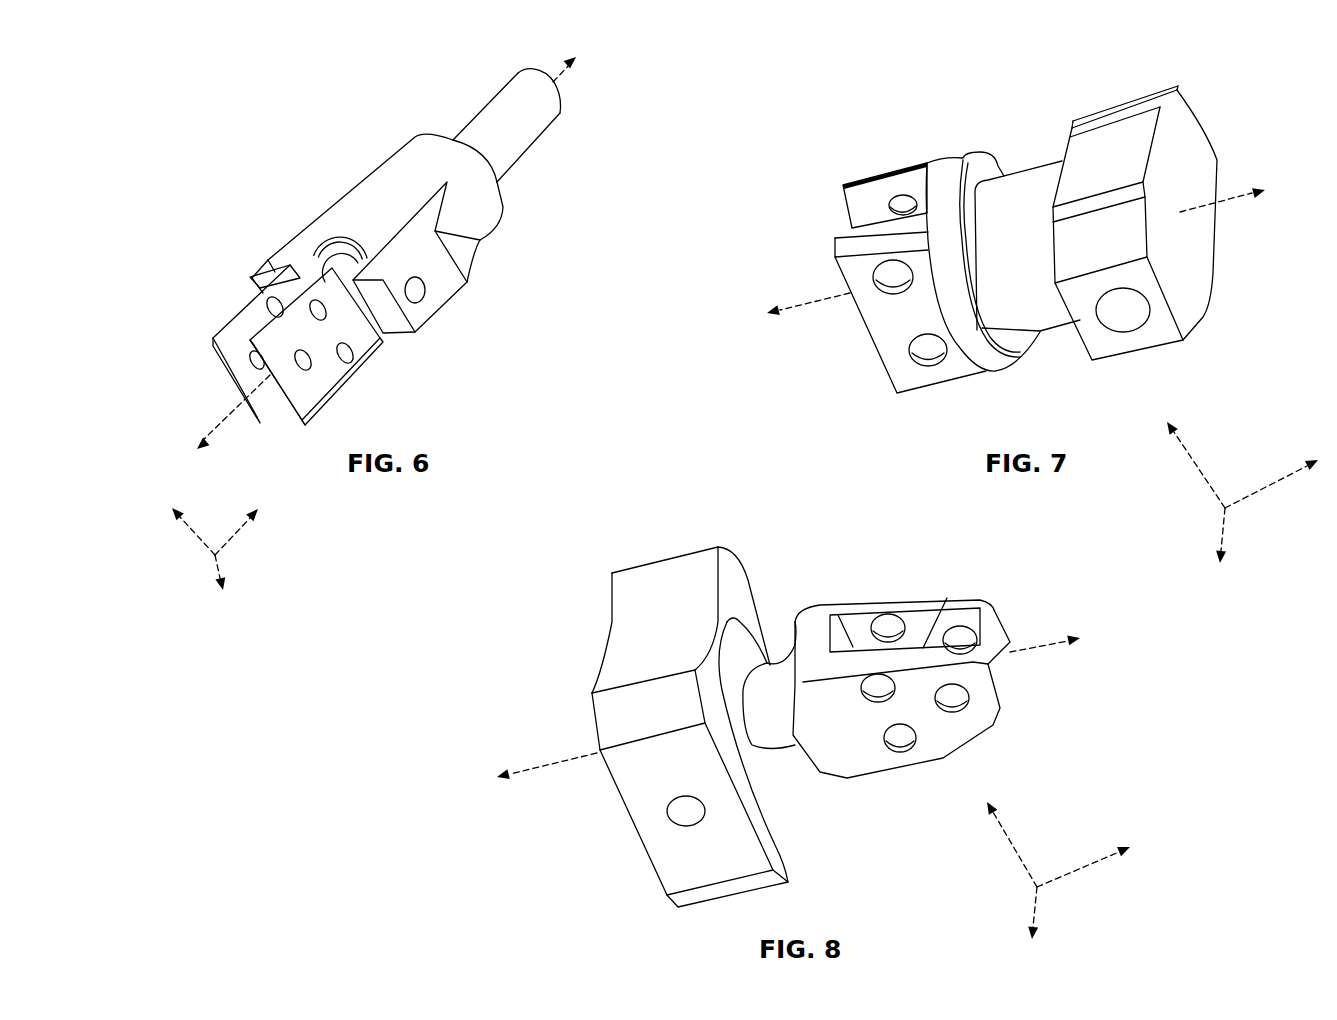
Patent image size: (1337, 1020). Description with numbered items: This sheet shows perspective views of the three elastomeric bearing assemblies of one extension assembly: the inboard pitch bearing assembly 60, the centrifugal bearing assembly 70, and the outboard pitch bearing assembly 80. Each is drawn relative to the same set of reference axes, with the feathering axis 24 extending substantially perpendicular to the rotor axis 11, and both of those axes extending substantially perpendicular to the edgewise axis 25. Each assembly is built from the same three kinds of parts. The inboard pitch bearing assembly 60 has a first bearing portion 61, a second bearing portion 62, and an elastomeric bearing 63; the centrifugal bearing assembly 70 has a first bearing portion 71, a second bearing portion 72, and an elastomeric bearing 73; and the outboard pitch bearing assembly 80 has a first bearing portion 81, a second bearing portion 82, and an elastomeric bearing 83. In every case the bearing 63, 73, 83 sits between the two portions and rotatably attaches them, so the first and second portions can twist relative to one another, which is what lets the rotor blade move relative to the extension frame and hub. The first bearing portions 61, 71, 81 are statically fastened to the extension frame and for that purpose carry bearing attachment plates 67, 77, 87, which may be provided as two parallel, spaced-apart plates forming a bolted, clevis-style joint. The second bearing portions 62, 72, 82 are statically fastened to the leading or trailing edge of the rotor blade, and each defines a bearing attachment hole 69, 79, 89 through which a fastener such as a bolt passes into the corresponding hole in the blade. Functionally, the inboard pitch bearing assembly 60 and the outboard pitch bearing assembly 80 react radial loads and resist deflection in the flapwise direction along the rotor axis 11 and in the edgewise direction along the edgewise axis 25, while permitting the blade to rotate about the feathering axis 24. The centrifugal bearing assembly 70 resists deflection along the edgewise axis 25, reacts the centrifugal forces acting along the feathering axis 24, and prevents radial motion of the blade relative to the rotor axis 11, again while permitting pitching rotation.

In FIG. 6, the inboard pitch bearing assembly 60 is at (192, 72).
In FIG. 6, the first bearing portion 61 is at (347, 381).
In FIG. 6, the second bearing portion 62 is at (478, 258).
In FIG. 6, the elastomeric bearing 63 is at (320, 248).
In FIG. 6, the bearing attachment plate 67 is at (262, 330).
In FIG. 6, the bearing attachment hole 69 is at (424, 296).
In FIG. 7, the centrifugal bearing assembly 70 is at (802, 72).
In FIG. 7, the first bearing portion 71 is at (948, 157).
In FIG. 7, the second bearing portion 72 is at (1085, 118).
In FIG. 7, the elastomeric bearing 73 is at (1014, 172).
In FIG. 7, the bearing attachment plate 77 is at (908, 226).
In FIG. 7, the bearing attachment hole 79 is at (1145, 326).
In FIG. 8, the outboard pitch bearing assembly 80 is at (615, 541).
In FIG. 8, the first bearing portion 81 is at (897, 772).
In FIG. 8, the second bearing portion 82 is at (793, 855).
In FIG. 8, the elastomeric bearing 83 is at (748, 622).
In FIG. 8, the bearing attachment plate 87 is at (971, 606).
In FIG. 8, the bearing attachment hole 89 is at (668, 822).
In FIG. 6, the feathering axis 24 is at (558, 78).
In FIG. 7, the feathering axis 24 is at (1229, 203).
In FIG. 8, the feathering axis 24 is at (1048, 645).
In FIG. 6, the rotor axis 11 is at (203, 532).
In FIG. 7, the rotor axis 11 is at (1195, 462).
In FIG. 8, the rotor axis 11 is at (1015, 840).
In FIG. 6, the edgewise axis 25 is at (212, 560).
In FIG. 7, the edgewise axis 25 is at (1222, 527).
In FIG. 8, the edgewise axis 25 is at (1037, 902).